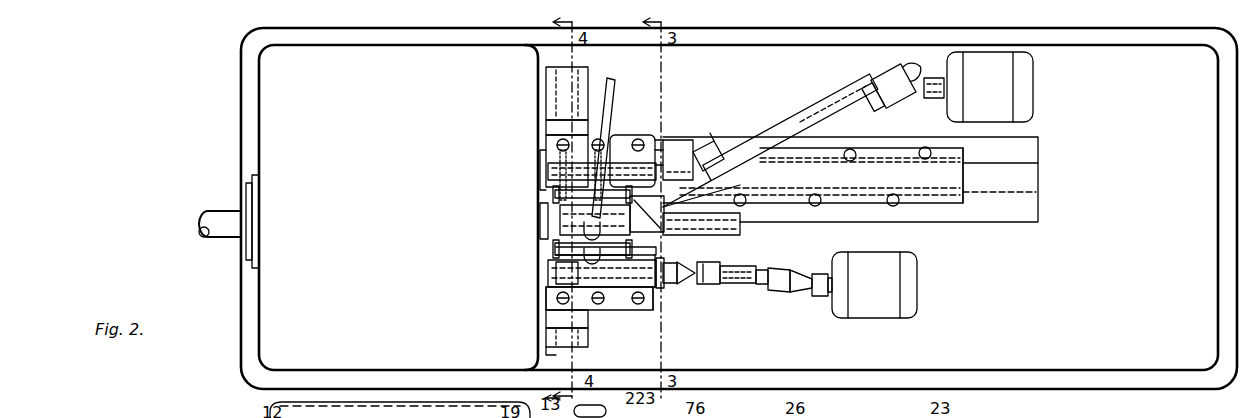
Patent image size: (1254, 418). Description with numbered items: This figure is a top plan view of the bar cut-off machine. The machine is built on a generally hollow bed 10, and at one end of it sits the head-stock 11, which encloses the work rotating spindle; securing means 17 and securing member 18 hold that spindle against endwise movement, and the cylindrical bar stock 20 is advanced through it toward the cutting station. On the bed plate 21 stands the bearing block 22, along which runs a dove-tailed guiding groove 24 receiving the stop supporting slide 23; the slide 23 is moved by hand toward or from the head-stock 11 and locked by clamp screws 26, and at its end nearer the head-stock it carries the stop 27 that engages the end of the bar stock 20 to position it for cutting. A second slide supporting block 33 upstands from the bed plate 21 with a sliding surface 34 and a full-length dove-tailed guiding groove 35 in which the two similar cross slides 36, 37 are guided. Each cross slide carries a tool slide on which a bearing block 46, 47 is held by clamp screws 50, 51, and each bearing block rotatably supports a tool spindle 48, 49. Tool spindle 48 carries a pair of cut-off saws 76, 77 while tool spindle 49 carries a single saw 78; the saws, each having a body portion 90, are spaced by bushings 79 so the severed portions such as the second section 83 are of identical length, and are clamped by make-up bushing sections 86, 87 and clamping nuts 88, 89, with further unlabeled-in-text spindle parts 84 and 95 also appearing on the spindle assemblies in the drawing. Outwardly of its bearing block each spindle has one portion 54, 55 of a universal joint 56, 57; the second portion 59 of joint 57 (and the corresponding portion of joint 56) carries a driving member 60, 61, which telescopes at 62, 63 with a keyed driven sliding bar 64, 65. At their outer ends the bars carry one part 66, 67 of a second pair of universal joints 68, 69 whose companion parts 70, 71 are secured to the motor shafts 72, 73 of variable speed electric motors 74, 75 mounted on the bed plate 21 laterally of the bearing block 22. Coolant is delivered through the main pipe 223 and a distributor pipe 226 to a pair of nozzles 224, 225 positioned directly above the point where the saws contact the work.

The bed 10 is at (1128, 389).
The head-stock 11 is at (273, 89).
The securing means 17 is at (253, 186).
The spindle securing member 18 is at (547, 201).
The bar stock 20 is at (225, 212).
The bed plate 21 is at (1185, 370).
The bearing block 22 is at (1012, 222).
The stop supporting slide 23 is at (951, 210).
The guiding groove 24 is at (1012, 163).
The clamp screws 26 is at (902, 208).
The stop 27 is at (680, 202).
The slide supporting block 33 is at (586, 84).
The sliding surface 34 is at (590, 340).
The guiding groove 35 is at (558, 349).
The cross slide 36 is at (656, 132).
The cross slide 37 is at (652, 318).
The bearing block 46 is at (737, 190).
The bearing block 47 is at (637, 312).
The tool spindle 48 is at (662, 148).
The tool spindle 49 is at (556, 317).
The clamp screws 50 is at (560, 128).
The clamp screws 51 is at (558, 294).
The universal joint portion 54 is at (690, 167).
The universal joint portion 55 is at (692, 272).
The universal joint 56 is at (705, 150).
The universal joint 57 is at (702, 283).
The universal joint second portion 59 is at (718, 142).
The driving member 60 is at (772, 142).
The driving member 61 is at (737, 285).
The telescoping joint 62 is at (848, 98).
The telescoping joint 63 is at (750, 272).
The driven sliding bar 64 is at (880, 86).
The driven sliding bar 65 is at (778, 276).
The universal joint part 66 is at (893, 110).
The universal joint part 67 is at (786, 294).
The universal joint 68 is at (902, 77).
The universal joint 69 is at (818, 262).
The universal joint second part 70 is at (935, 100).
The universal joint second part 71 is at (826, 294).
The motor shaft 72 is at (944, 88).
The motor shaft 73 is at (836, 284).
The variable speed electric motor 74 is at (1016, 92).
The variable speed electric motor 75 is at (877, 318).
The cut-off saw 76 is at (633, 140).
The cut-off saw 77 is at (557, 144).
The cut-off saw 78 is at (600, 310).
The bushings 79 is at (548, 150).
The bar stock second section 83 is at (553, 240).
The left threaded rod 84 is at (548, 168).
The make-up bushing section 86 is at (548, 181).
The make-up bushing section 87 is at (558, 284).
The clamping nut 88 is at (556, 162).
The clamping nut 89 is at (546, 275).
The saw body portion 90 is at (647, 212).
The left guide strip 95 is at (548, 228).
The pipe 223 is at (612, 92).
The nozzle 224 is at (560, 216).
The nozzle 225 is at (662, 300).
The distributor pipe 226 is at (652, 245).